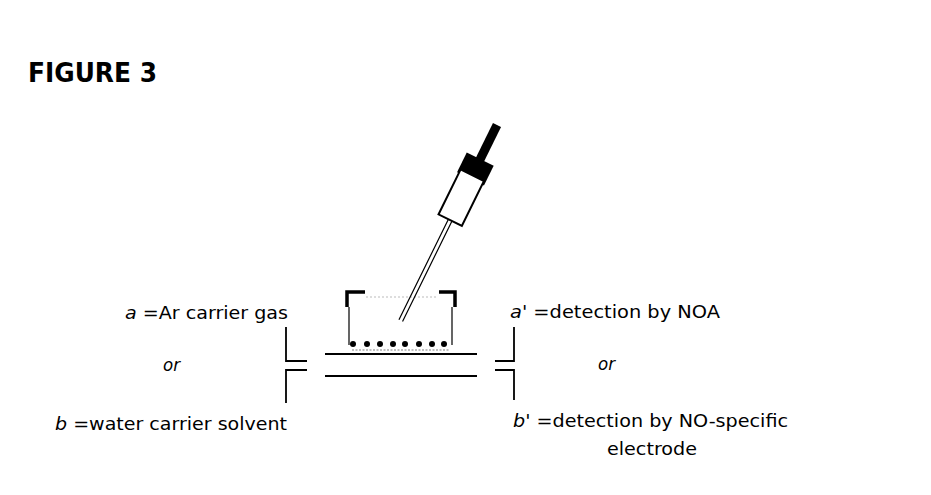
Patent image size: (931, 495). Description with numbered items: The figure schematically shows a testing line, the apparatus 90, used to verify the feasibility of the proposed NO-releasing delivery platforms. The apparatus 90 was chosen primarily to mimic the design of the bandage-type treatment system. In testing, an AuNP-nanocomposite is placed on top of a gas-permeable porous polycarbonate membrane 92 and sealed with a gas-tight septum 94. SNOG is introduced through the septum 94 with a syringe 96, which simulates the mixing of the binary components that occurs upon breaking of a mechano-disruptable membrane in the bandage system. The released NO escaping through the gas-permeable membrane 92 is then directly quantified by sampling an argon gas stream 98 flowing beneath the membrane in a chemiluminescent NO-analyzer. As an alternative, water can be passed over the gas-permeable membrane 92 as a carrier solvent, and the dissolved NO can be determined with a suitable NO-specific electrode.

The apparatus 90 is at (226, 186).
The gas-permeable membrane 92 is at (364, 336).
The gas-tight septum 94 is at (388, 286).
The syringe 96 is at (418, 312).
The Ar(g) stream 98 is at (382, 378).